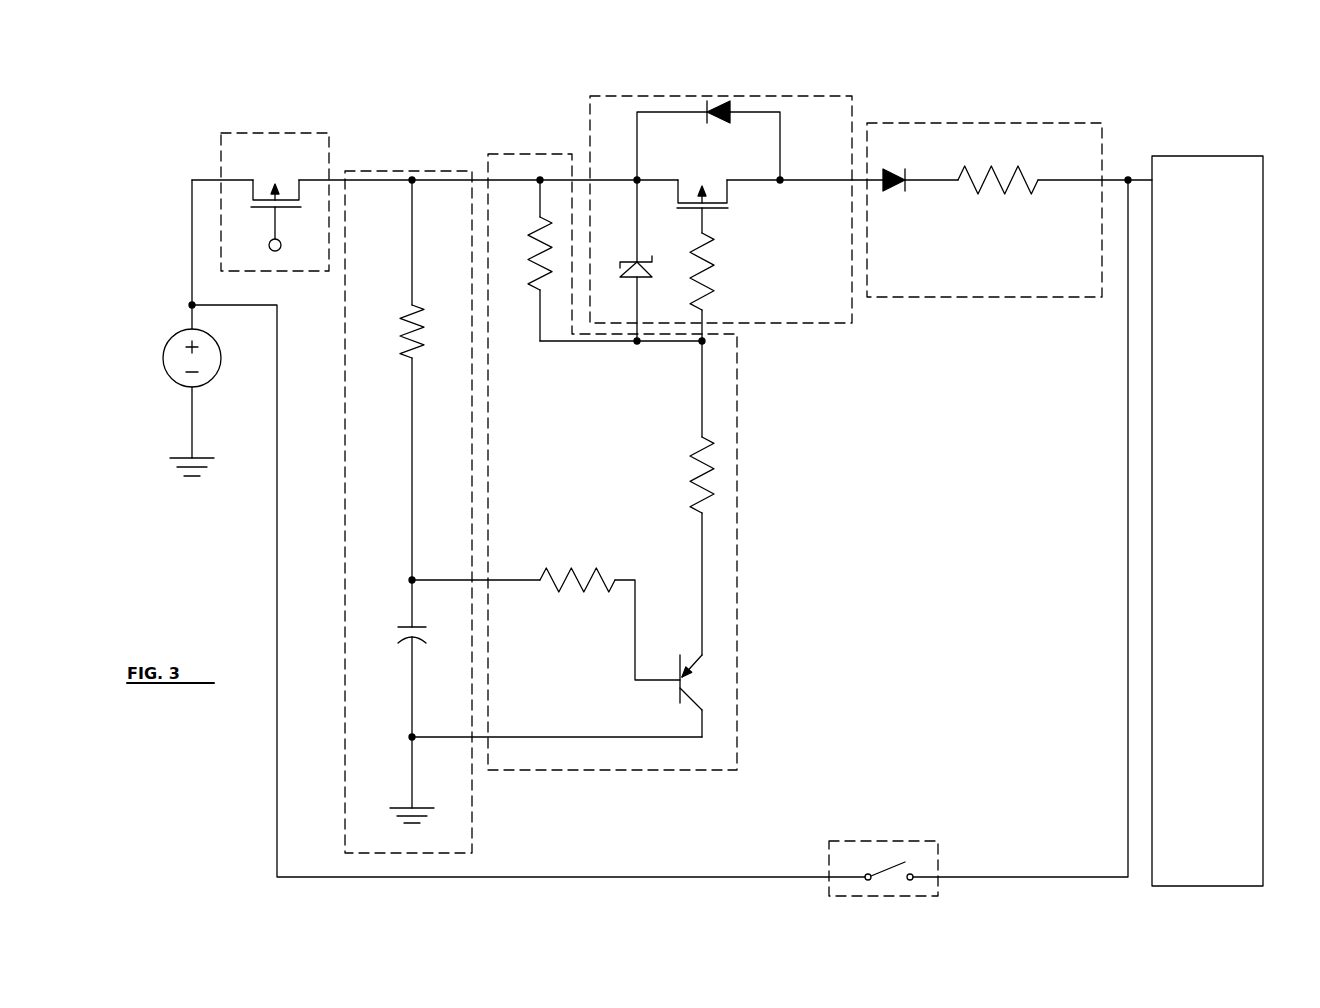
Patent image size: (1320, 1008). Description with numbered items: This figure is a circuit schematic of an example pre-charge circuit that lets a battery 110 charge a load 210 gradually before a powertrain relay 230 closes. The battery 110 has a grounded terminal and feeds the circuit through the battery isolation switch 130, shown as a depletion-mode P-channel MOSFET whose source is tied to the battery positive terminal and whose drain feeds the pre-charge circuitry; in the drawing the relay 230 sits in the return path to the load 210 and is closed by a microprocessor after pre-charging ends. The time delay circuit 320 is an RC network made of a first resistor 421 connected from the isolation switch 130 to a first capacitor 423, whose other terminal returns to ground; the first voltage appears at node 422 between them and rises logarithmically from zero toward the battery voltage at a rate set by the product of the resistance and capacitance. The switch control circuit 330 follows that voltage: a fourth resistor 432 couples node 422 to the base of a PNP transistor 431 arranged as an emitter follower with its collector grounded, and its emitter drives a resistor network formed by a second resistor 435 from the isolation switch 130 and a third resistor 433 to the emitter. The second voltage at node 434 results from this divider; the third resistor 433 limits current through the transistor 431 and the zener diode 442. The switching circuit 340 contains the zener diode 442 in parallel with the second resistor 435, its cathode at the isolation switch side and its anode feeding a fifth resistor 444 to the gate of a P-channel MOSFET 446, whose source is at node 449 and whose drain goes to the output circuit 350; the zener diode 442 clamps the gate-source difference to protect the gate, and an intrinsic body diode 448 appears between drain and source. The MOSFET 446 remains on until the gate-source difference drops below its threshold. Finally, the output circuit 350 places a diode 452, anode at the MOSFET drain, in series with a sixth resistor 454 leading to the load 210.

The battery 110 is at (220, 368).
The battery isolation switch 130 is at (213, 140).
The load 210 is at (1243, 155).
The powertrain relay 230 is at (855, 838).
The time delay circuit 320 is at (367, 170).
The switch control circuit 330 is at (493, 145).
The switching circuit 340 is at (788, 95).
The output circuit 350 is at (940, 120).
The first resistor 421 is at (410, 313).
The node 422 is at (408, 578).
The first capacitor 423 is at (405, 640).
The PNP transistor 431 is at (677, 690).
The fourth resistor 432 is at (570, 565).
The third resistor 433 is at (690, 482).
The node 434 is at (702, 343).
The second resistor 435 is at (535, 288).
The zener diode 442 is at (635, 262).
The fifth resistor 444 is at (718, 268).
The MOSFET 446 is at (723, 210).
The intrinsic body diode 448 is at (727, 123).
The node 449 is at (639, 176).
The diode 452 is at (893, 184).
The sixth resistor 454 is at (1030, 192).